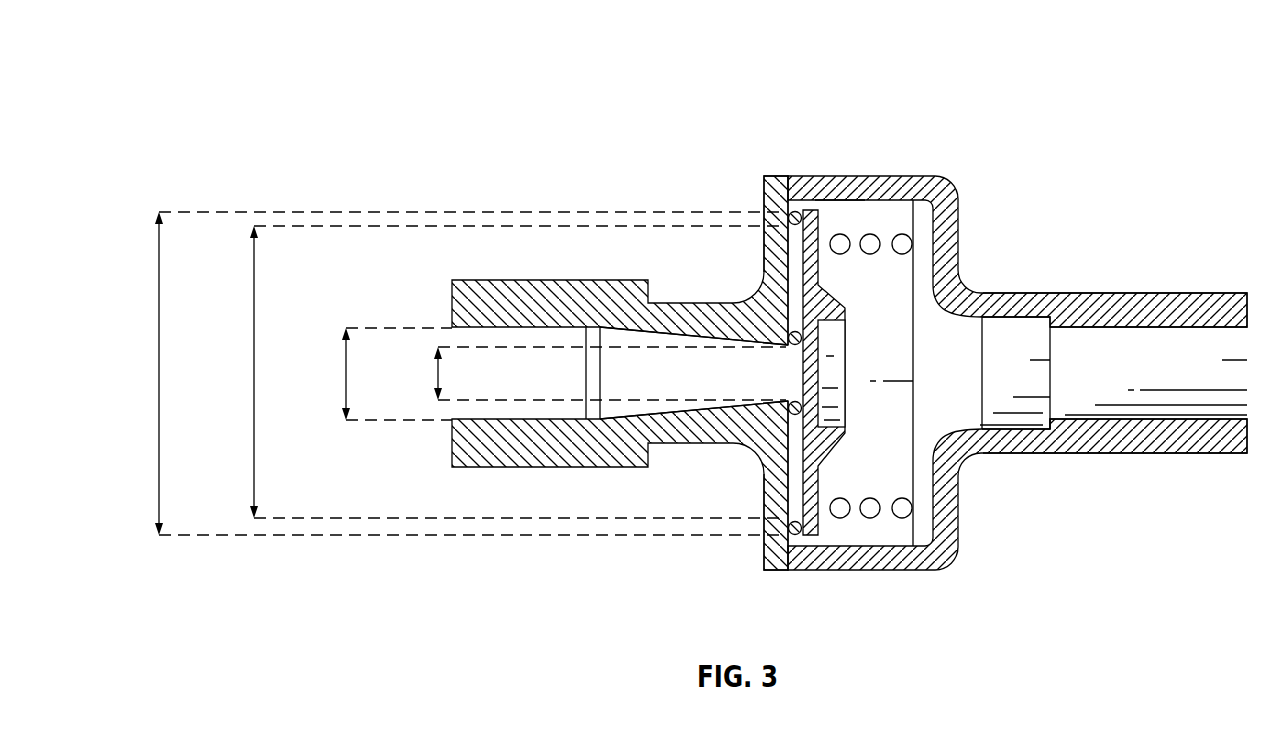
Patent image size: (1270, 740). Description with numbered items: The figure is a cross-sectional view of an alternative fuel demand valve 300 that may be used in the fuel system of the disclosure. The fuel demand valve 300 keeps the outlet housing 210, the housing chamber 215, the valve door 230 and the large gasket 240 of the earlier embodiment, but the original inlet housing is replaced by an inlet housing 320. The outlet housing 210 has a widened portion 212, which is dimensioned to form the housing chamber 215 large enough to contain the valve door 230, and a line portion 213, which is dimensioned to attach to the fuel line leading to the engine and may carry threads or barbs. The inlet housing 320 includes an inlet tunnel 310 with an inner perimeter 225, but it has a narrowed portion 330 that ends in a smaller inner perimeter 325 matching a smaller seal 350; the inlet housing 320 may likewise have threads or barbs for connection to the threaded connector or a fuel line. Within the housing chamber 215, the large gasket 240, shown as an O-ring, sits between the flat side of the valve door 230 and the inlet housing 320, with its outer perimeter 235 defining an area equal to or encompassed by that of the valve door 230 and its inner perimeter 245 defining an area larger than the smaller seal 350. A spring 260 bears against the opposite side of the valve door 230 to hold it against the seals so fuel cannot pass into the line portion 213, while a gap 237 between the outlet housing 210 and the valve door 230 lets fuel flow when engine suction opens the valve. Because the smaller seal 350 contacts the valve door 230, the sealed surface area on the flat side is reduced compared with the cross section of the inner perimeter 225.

The fuel demand valve 300 is at (1173, 64).
The outlet housing 210 is at (997, 293).
The widened portion 212 is at (823, 571).
The line portion 213 is at (1050, 455).
The housing chamber 215 is at (937, 197).
The inner perimeter 225 is at (346, 378).
The valve door 230 is at (818, 225).
The outer perimeter 235 is at (159, 304).
The gap 237 is at (840, 200).
The large gasket 240 is at (780, 182).
The inner perimeter 245 is at (254, 343).
The spring 260 is at (907, 212).
The inlet tunnel 310 is at (467, 421).
The inlet housing 320 is at (528, 280).
The smaller inner perimeter 325 is at (438, 370).
The narrowed portion 330 is at (653, 413).
The smaller seal 350 is at (792, 413).